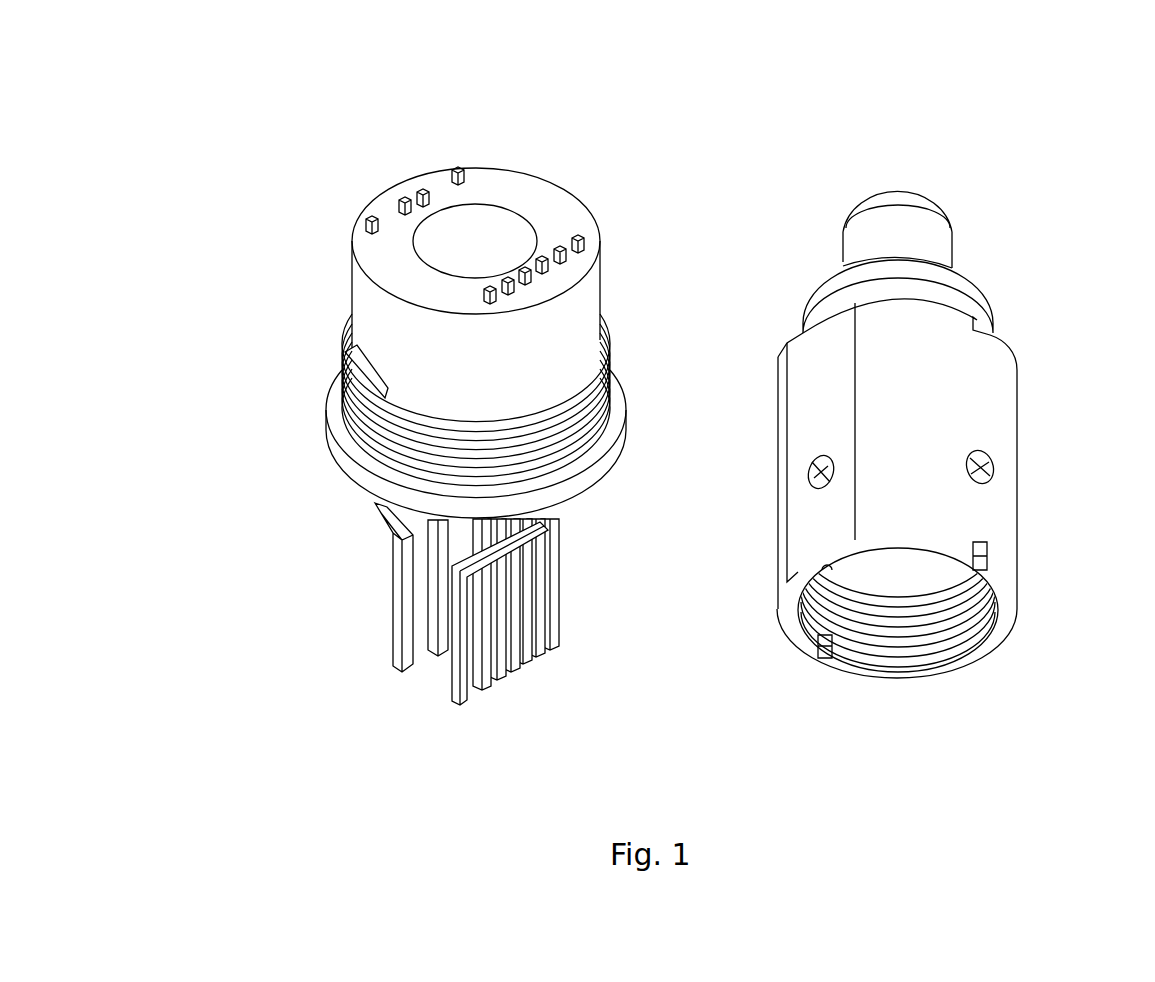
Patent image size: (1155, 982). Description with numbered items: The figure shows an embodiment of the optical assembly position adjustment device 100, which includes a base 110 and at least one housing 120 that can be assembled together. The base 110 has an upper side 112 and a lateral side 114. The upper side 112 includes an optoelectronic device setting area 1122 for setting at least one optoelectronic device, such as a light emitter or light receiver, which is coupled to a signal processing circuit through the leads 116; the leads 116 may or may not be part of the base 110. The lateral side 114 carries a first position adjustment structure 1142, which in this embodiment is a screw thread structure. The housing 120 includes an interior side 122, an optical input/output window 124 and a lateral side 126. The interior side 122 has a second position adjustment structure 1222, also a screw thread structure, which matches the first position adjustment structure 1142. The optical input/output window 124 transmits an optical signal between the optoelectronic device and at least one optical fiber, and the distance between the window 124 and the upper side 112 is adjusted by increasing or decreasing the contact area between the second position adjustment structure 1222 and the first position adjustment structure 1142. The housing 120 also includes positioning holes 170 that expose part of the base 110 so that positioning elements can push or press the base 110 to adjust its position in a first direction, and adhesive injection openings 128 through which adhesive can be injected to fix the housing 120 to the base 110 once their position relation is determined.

The optical assembly position adjustment device 100 is at (162, 788).
The base 110 is at (225, 170).
The upper side 112 is at (552, 200).
The optoelectronic device setting area 1122 is at (501, 208).
The lateral side 114 is at (363, 292).
The first position adjustment structure 1142 is at (347, 368).
The leads 116 is at (460, 160).
The housing 120 is at (1030, 85).
The interior side 122 is at (872, 577).
The second position adjustment structure 1222 is at (953, 640).
The optical input/output window 124 is at (898, 186).
The lateral side 126 is at (1000, 385).
The adhesive injection opening 128 is at (984, 560).
The positioning hole 170 is at (810, 470).